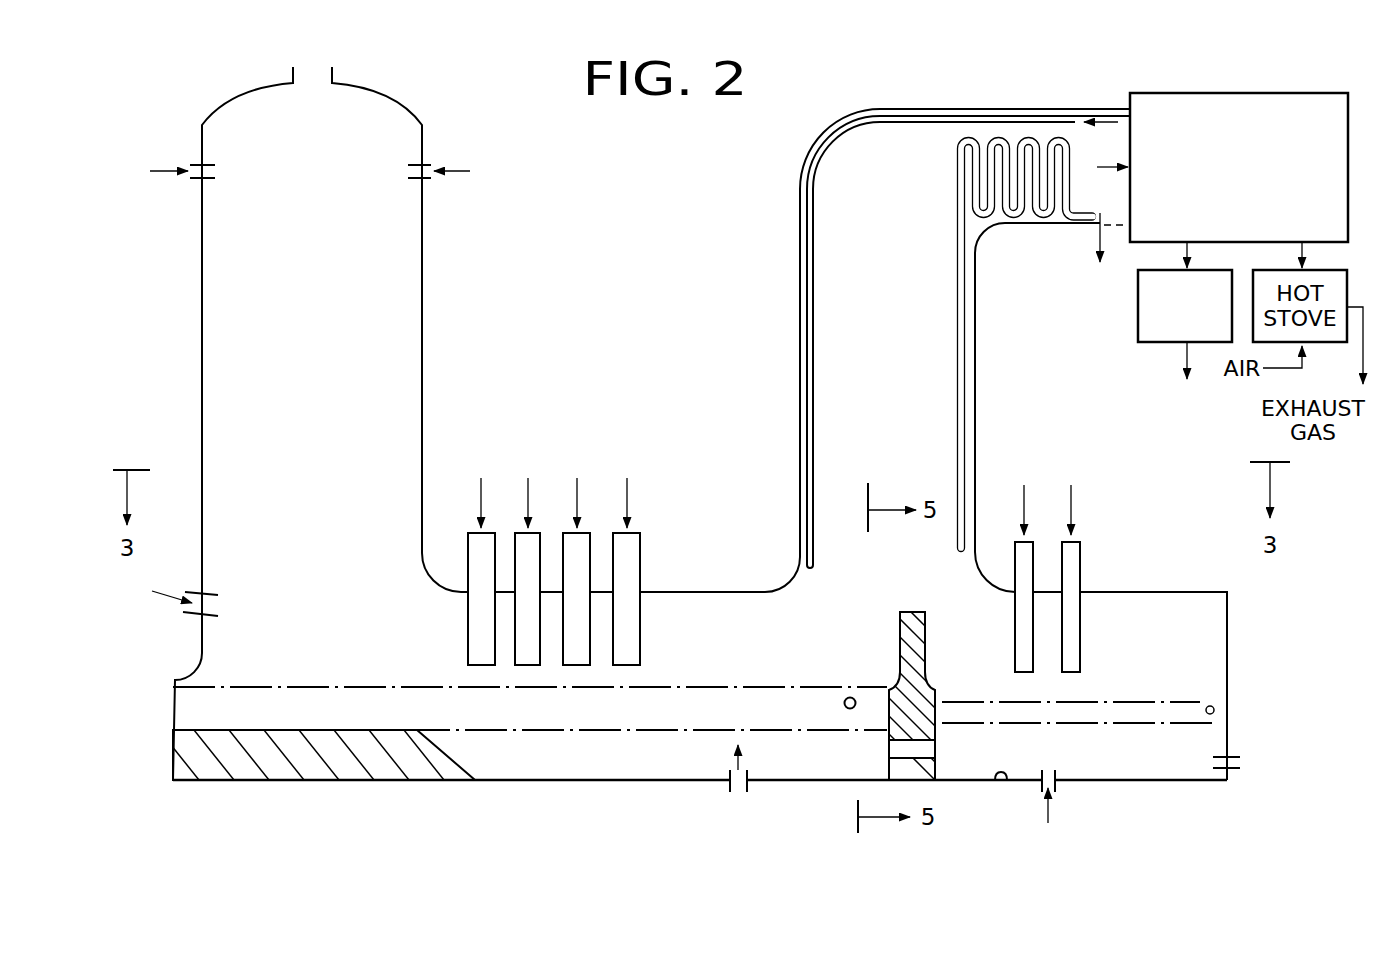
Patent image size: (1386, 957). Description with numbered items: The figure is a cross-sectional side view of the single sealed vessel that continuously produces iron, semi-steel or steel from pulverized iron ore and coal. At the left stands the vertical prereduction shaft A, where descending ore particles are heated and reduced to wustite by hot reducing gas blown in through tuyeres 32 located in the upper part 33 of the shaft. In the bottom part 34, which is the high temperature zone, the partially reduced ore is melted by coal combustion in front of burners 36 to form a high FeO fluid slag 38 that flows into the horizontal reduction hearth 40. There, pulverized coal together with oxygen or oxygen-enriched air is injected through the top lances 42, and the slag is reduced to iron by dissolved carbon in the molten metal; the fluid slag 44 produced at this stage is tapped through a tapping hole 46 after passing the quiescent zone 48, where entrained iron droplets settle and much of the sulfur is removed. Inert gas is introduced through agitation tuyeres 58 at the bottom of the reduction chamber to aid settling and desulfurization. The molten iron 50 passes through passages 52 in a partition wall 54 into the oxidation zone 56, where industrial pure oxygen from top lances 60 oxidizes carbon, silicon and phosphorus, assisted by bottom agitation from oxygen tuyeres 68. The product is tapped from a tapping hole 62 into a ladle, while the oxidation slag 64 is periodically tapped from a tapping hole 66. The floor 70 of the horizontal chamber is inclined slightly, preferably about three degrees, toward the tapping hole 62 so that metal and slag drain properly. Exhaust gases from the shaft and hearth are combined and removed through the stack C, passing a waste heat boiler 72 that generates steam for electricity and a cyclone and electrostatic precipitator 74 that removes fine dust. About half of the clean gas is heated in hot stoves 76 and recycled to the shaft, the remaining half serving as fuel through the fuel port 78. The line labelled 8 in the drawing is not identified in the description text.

The reduction furnace lower chamber top wall 8 is at (669, 585).
The tuyeres 32 is at (437, 158).
The upper part of shaft 33 is at (314, 307).
The bottom part of shaft 34 is at (320, 590).
The burners 36 is at (208, 597).
The high FeO fluid slag 38 is at (437, 705).
The reduction hearth 40 is at (546, 748).
The top lances 42 is at (527, 625).
The fluid slag 44 is at (657, 702).
The tapping hole 46 is at (855, 697).
The quiescent zone 48 is at (687, 745).
The molten iron 50 is at (851, 752).
The passages 52 is at (922, 750).
The partition wall or barrier 54 is at (918, 635).
The oxidation zone 56 is at (1098, 696).
The agitation tuyeres 58 is at (738, 795).
The top lances 60 is at (1023, 560).
The tapping hole 62 is at (1240, 760).
The slag 64 is at (1172, 702).
The tapping hole 66 is at (1218, 710).
The oxygen tuyeres 68 is at (1049, 771).
The floor 70 is at (1005, 780).
The waste heat boiler 72 is at (1002, 140).
The cyclone and electrostatic precipitator 74 is at (1235, 93).
The hot stoves 76 is at (1138, 328).
The fuel port 78 is at (1182, 250).
The prereduction shaft A is at (432, 275).
The gas exhaust stack C is at (796, 233).